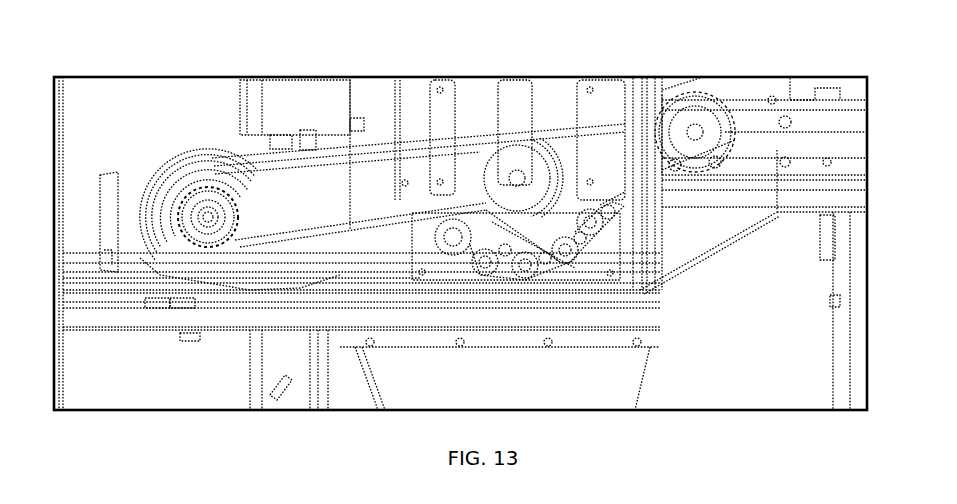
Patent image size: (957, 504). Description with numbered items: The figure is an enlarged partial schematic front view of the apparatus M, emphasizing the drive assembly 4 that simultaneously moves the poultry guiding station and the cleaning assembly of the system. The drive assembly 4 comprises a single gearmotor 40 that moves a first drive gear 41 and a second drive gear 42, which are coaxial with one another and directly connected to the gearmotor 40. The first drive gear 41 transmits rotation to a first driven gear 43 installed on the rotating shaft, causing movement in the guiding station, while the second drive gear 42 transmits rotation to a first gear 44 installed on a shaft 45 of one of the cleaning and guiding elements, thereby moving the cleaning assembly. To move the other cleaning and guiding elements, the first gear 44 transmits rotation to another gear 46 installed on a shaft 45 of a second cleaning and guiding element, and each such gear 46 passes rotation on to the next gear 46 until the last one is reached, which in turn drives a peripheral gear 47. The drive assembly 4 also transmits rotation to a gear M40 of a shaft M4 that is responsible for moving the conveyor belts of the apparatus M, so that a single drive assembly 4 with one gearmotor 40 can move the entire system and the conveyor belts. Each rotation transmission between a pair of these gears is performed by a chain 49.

The drive assembly 4 is at (160, 132).
The gearmotor 40 is at (243, 160).
The first drive gear 41 is at (200, 210).
The second drive gear 42 is at (204, 184).
The first driven gear 43 is at (512, 162).
The first gear 44 is at (440, 242).
The shaft 45 is at (593, 223).
The another gear 46 is at (558, 262).
The peripheral gear 47 is at (603, 225).
The chain 49 is at (533, 247).
The apparatus M is at (830, 66).
The shaft M4 is at (695, 133).
The gear M40 is at (707, 143).